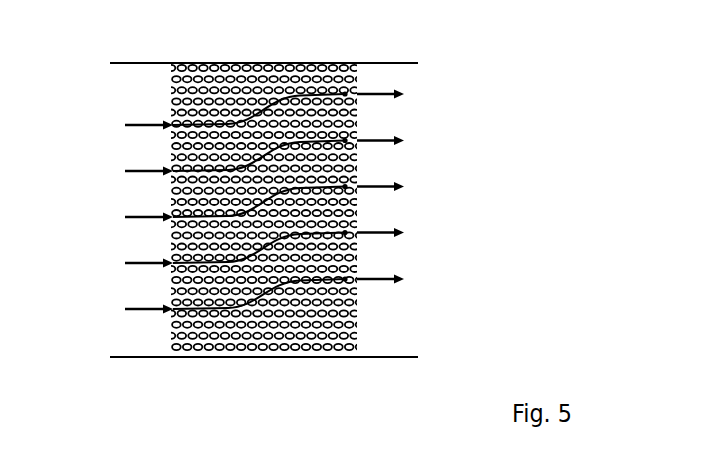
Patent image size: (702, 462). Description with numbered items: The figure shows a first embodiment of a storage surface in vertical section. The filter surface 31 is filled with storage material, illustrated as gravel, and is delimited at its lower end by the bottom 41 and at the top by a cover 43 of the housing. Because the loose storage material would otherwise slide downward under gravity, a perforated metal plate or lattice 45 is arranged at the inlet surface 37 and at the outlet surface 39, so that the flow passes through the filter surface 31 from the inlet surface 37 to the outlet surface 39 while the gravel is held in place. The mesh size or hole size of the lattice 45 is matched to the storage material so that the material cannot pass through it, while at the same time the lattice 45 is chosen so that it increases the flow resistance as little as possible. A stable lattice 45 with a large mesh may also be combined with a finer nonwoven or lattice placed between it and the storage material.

The filter surface 31 is at (287, 72).
The cover 43 is at (382, 62).
The bottom 41 is at (375, 357).
The inlet surface 37 is at (170, 101).
The outlet surface 39 is at (358, 116).
The lattice 45 is at (170, 162).